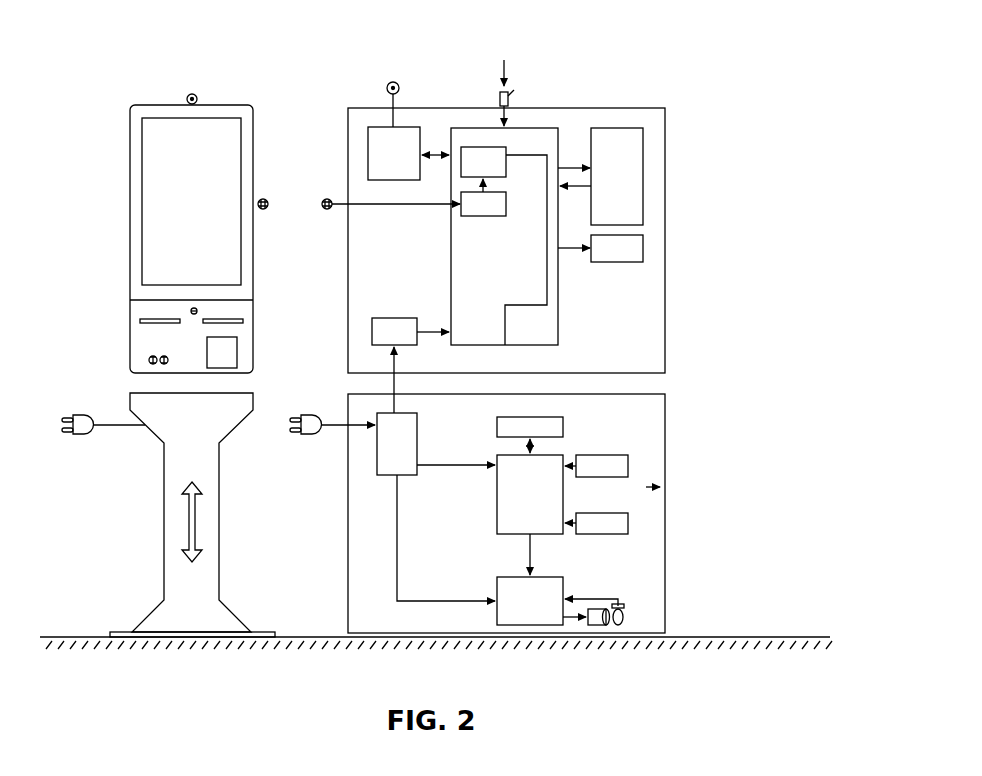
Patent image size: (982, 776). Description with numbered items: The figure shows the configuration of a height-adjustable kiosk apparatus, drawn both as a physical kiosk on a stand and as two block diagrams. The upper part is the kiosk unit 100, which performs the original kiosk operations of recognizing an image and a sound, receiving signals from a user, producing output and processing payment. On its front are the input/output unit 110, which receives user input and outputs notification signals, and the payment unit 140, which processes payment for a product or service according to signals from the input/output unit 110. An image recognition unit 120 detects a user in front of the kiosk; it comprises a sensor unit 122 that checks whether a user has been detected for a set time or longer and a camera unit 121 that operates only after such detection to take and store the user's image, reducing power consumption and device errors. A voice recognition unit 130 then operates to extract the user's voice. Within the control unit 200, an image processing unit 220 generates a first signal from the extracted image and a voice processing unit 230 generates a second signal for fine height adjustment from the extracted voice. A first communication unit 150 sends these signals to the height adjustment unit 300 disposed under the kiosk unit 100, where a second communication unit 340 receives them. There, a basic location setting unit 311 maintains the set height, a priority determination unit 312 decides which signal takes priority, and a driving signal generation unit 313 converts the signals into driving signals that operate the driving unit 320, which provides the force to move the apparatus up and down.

The kiosk unit 100 is at (120, 154).
The input/output unit 110 is at (166, 199).
The image recognition unit 120 is at (192, 93).
The camera unit 121 is at (393, 81).
The sensor unit 122 is at (408, 153).
The voice recognition unit 130 is at (327, 198).
The payment unit 140 is at (233, 342).
The first communication unit 150 is at (410, 365).
The control unit 200 is at (521, 236).
The image processing unit 220 is at (483, 162).
The voice processing unit 230 is at (483, 198).
The height adjustment unit 300 is at (150, 500).
The basic location setting unit 311 is at (530, 434).
The priority determination unit 312 is at (596, 466).
The driving signal generation unit 313 is at (596, 524).
The driving unit 320 is at (560, 540).
The second communication unit 340 is at (392, 507).